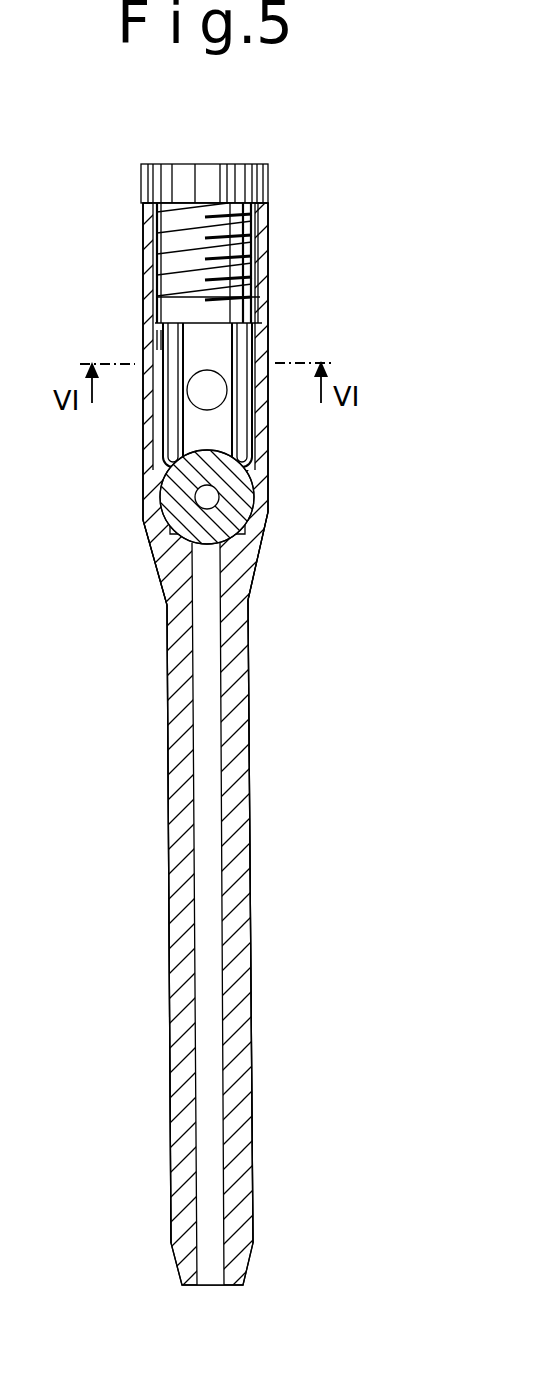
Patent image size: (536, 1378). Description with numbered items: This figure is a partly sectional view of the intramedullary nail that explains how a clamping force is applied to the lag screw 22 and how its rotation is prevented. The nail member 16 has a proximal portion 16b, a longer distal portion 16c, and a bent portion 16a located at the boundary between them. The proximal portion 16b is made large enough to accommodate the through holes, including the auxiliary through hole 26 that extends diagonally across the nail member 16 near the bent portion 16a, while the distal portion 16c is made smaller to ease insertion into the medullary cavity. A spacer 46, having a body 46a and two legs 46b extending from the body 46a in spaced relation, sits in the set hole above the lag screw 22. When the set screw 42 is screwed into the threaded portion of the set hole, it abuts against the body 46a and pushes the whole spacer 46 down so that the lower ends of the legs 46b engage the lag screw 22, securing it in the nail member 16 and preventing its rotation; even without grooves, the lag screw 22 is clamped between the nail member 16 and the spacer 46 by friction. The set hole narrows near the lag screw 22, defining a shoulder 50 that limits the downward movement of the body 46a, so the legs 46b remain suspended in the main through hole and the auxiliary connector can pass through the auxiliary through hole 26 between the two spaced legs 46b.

The nail member 16 is at (250, 800).
The bent portion 16a is at (262, 579).
The proximal portion 16b is at (278, 262).
The distal portion 16c is at (258, 703).
The lag screw 22 is at (242, 493).
The auxiliary through hole 26 is at (213, 397).
The set screw 42 is at (243, 182).
The spacer 46 is at (323, 335).
The body 46a is at (235, 307).
The legs 46b is at (243, 367).
The shoulder 50 is at (154, 340).